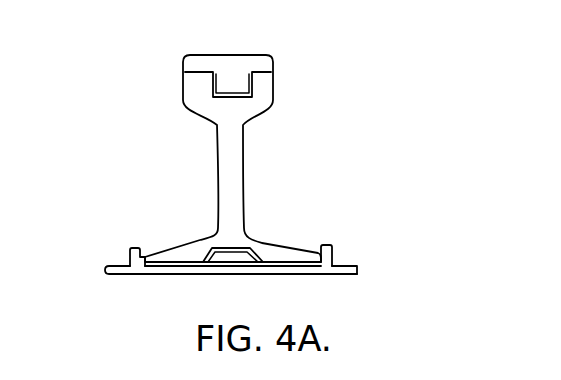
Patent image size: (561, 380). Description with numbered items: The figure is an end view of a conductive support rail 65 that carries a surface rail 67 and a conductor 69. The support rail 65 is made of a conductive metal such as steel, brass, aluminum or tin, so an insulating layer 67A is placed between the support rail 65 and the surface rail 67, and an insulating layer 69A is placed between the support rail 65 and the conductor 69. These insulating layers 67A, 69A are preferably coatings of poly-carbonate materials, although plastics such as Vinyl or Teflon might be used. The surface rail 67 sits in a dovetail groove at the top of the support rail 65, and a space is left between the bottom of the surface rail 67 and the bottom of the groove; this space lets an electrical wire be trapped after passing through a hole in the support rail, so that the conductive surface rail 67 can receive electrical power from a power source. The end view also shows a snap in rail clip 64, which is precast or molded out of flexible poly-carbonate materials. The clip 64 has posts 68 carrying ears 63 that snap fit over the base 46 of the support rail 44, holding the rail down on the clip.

The support rail 44 is at (162, 258).
The base 46 is at (182, 242).
The ears 63 is at (327, 245).
The snap in rail clip 64 is at (133, 270).
The support rail 65 is at (231, 157).
The surface rail 67 is at (233, 55).
The insulating layer 67A is at (274, 70).
The posts 68 is at (333, 250).
The conductor 69 is at (225, 257).
The insulating layer 69A is at (253, 257).